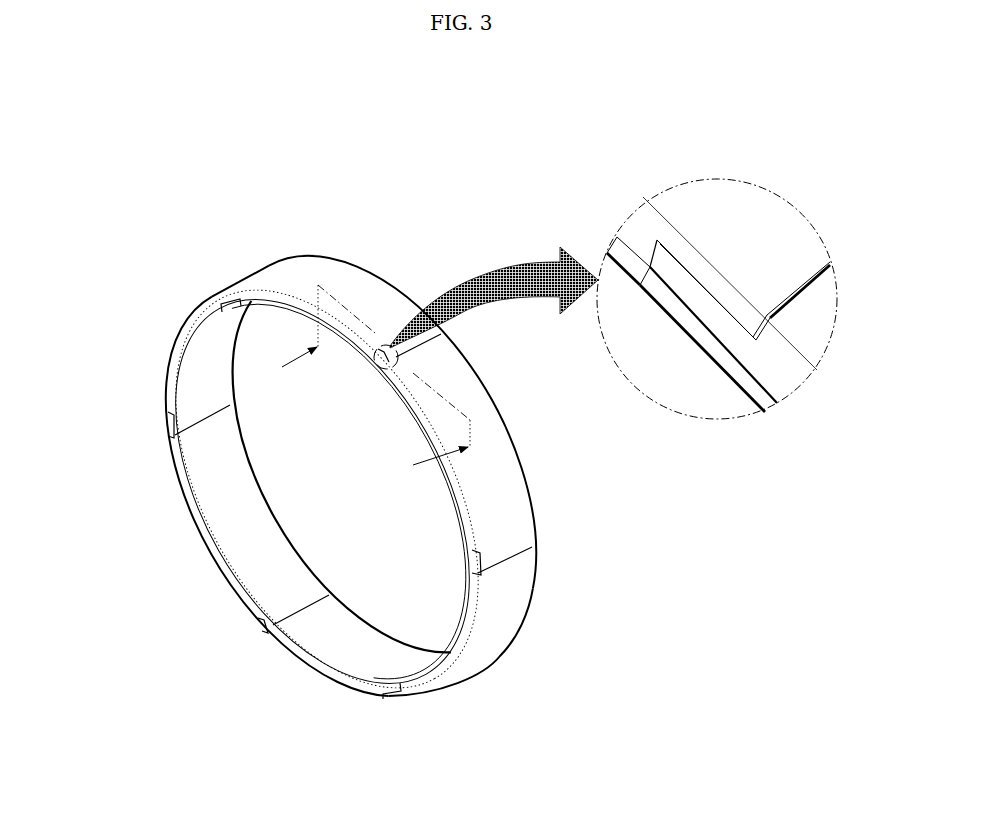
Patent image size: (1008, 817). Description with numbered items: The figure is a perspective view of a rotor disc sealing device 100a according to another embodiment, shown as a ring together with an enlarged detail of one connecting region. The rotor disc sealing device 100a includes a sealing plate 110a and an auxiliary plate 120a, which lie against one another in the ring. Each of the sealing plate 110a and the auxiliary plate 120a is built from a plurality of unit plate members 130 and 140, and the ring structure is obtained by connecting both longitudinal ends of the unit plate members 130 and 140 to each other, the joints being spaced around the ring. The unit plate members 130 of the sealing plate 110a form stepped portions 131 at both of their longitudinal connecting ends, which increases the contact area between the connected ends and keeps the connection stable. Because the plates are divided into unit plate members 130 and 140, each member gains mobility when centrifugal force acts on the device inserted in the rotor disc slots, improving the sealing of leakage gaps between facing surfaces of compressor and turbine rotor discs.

The rotor disc sealing device 100a is at (550, 376).
The sealing plate 110a is at (643, 218).
The auxiliary plate 120a is at (612, 242).
The unit plate member 130 is at (313, 262).
The stepped portion 131 is at (692, 280).
The unit plate member 140 is at (340, 335).